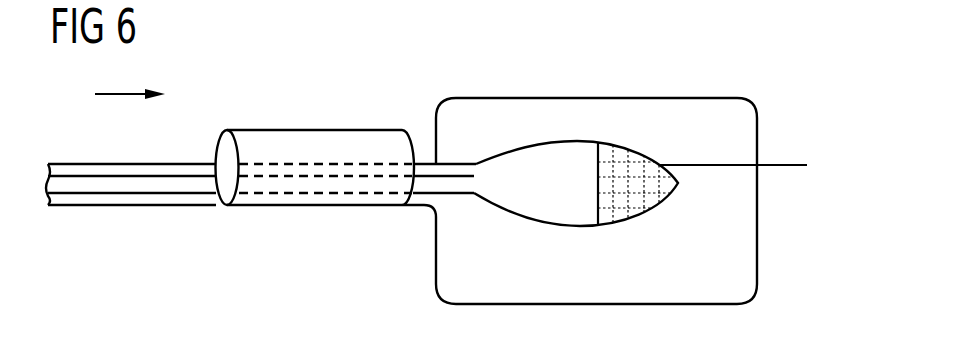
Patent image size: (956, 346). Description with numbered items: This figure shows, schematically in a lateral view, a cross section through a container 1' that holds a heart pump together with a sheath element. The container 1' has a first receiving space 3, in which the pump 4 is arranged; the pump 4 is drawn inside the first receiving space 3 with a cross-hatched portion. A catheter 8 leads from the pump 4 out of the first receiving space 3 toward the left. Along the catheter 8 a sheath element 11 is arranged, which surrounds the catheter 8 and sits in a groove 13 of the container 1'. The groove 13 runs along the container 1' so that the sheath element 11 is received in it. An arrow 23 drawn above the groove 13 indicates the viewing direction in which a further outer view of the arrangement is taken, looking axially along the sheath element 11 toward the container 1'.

The container 1' is at (804, 62).
The first receiving space 3 is at (481, 103).
The pump 4 is at (586, 229).
The catheter 8 is at (460, 186).
The sheath element 11 is at (279, 130).
The groove 13 is at (172, 162).
The arrow 23 is at (120, 98).